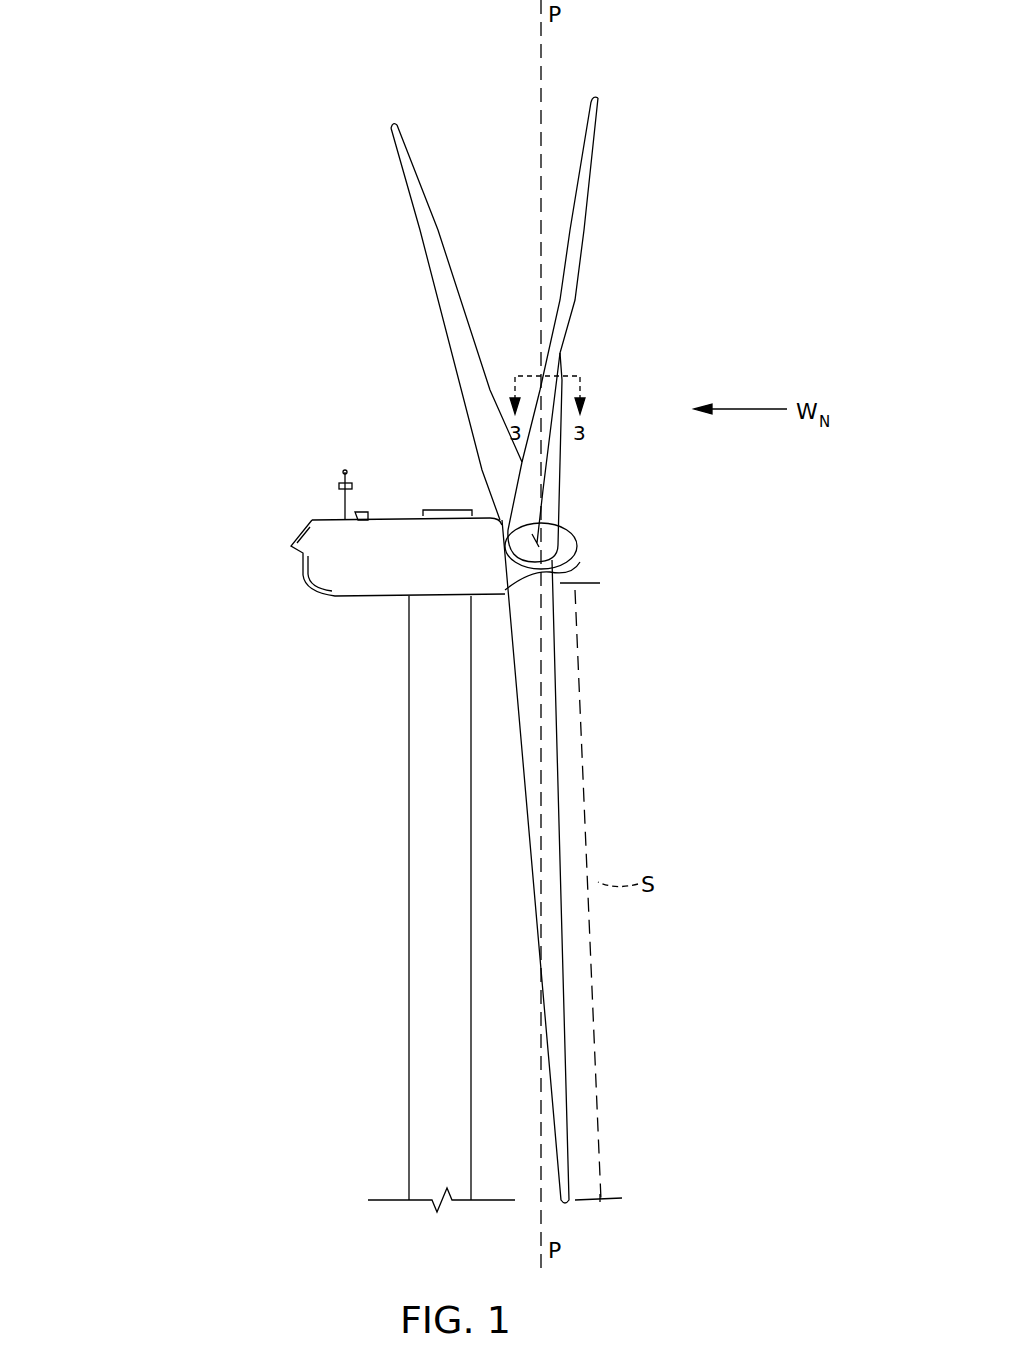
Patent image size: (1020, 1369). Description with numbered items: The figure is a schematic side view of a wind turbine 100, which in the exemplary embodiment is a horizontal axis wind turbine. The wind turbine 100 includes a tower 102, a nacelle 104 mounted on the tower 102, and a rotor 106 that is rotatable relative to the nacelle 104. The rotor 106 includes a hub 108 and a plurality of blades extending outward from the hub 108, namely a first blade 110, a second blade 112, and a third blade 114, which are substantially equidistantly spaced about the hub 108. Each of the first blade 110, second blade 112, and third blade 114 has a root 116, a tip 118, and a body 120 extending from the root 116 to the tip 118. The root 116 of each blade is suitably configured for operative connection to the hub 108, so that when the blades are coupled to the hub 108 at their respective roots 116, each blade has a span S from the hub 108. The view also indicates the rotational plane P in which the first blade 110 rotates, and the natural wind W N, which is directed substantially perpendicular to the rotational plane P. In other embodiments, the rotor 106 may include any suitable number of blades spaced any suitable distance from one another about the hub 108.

The wind turbine 100 is at (206, 135).
The tower 102 is at (425, 940).
The nacelle 104 is at (405, 548).
The rotor 106 is at (628, 579).
The hub 108 is at (568, 540).
The first blade 110 is at (603, 141).
The second blade 112 is at (440, 213).
The third blade 114 is at (515, 809).
The root 116 is at (575, 558).
The tip 118 is at (594, 98).
The body 120 is at (560, 353).